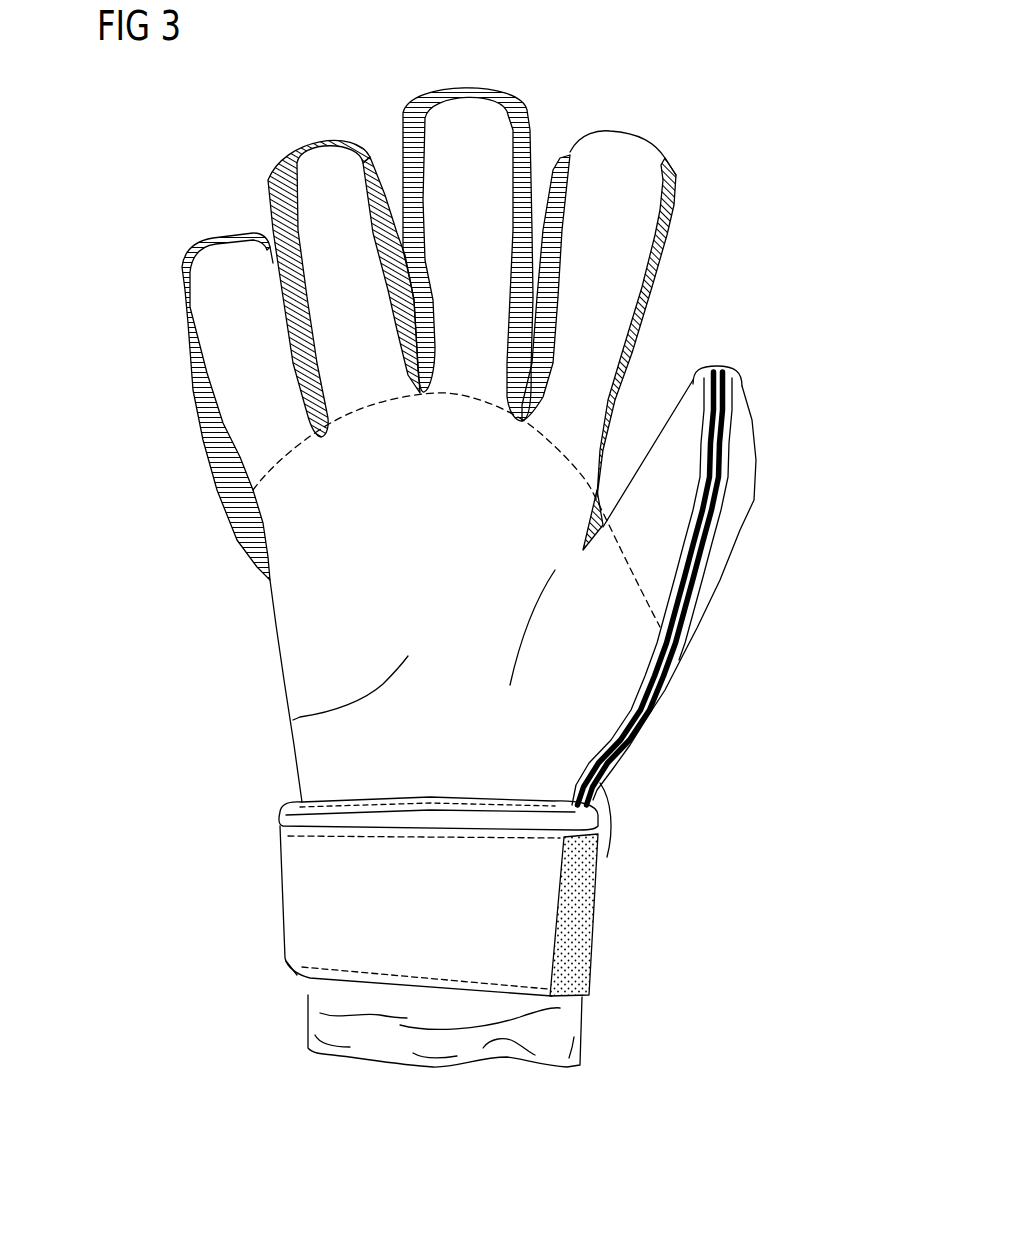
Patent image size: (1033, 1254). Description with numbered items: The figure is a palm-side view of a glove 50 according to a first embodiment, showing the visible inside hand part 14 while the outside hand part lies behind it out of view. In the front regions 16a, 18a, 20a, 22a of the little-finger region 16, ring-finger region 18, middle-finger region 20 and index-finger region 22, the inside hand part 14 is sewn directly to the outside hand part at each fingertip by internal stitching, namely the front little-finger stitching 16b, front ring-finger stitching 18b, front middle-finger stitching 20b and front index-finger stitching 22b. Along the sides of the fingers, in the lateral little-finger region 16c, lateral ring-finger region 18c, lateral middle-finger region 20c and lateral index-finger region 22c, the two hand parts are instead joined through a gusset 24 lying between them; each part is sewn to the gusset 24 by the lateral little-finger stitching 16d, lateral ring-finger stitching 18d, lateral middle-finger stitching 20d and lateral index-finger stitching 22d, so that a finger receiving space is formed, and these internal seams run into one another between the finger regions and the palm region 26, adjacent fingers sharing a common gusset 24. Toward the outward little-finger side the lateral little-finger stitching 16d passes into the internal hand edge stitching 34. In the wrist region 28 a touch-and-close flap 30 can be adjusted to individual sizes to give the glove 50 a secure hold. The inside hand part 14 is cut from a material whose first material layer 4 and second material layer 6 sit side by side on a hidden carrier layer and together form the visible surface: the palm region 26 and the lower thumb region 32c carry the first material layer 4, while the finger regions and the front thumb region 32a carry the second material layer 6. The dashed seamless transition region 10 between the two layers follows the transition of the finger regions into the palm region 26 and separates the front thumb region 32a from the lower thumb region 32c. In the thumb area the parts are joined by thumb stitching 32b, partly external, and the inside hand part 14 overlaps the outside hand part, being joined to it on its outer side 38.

The first material layer 4 is at (320, 762).
The second material layer 6 is at (633, 232).
The seamless transition region 10 is at (613, 545).
The inside hand part 14 is at (283, 694).
The little-finger region 16 is at (183, 294).
The front little-finger region 16a is at (240, 272).
The front little-finger stitching 16b is at (254, 236).
The lateral little-finger region 16c is at (313, 427).
The lateral little-finger stitching 16d is at (282, 390).
The ring-finger region 18 is at (376, 144).
The front ring-finger region 18a is at (333, 173).
The front ring-finger stitching 18b is at (323, 136).
The lateral ring-finger region 18c is at (387, 350).
The lateral ring-finger stitching 18d is at (387, 323).
The middle-finger region 20 is at (531, 103).
The front middle-finger region 20a is at (480, 120).
The front middle-finger stitching 20b is at (463, 90).
The lateral middle-finger region 20c is at (503, 333).
The lateral middle-finger stitching 20d is at (502, 292).
The index-finger region 22 is at (686, 199).
The front index-finger region 22a is at (610, 162).
The front index-finger stitching 22b is at (647, 136).
The lateral index-finger region 22c is at (600, 395).
The lateral index-finger stitching 22d is at (625, 350).
The gusset 24 is at (282, 176).
The palm region 26 is at (293, 720).
The wrist region 28 is at (547, 1028).
The touch-and-close flap 30 is at (533, 923).
The front thumb region 32a is at (665, 550).
The thumb stitching 32b is at (713, 517).
The lower thumb region 32c is at (630, 613).
The hand edge stitching 34 is at (277, 633).
The outer side 38 is at (740, 497).
The glove 50 is at (142, 389).